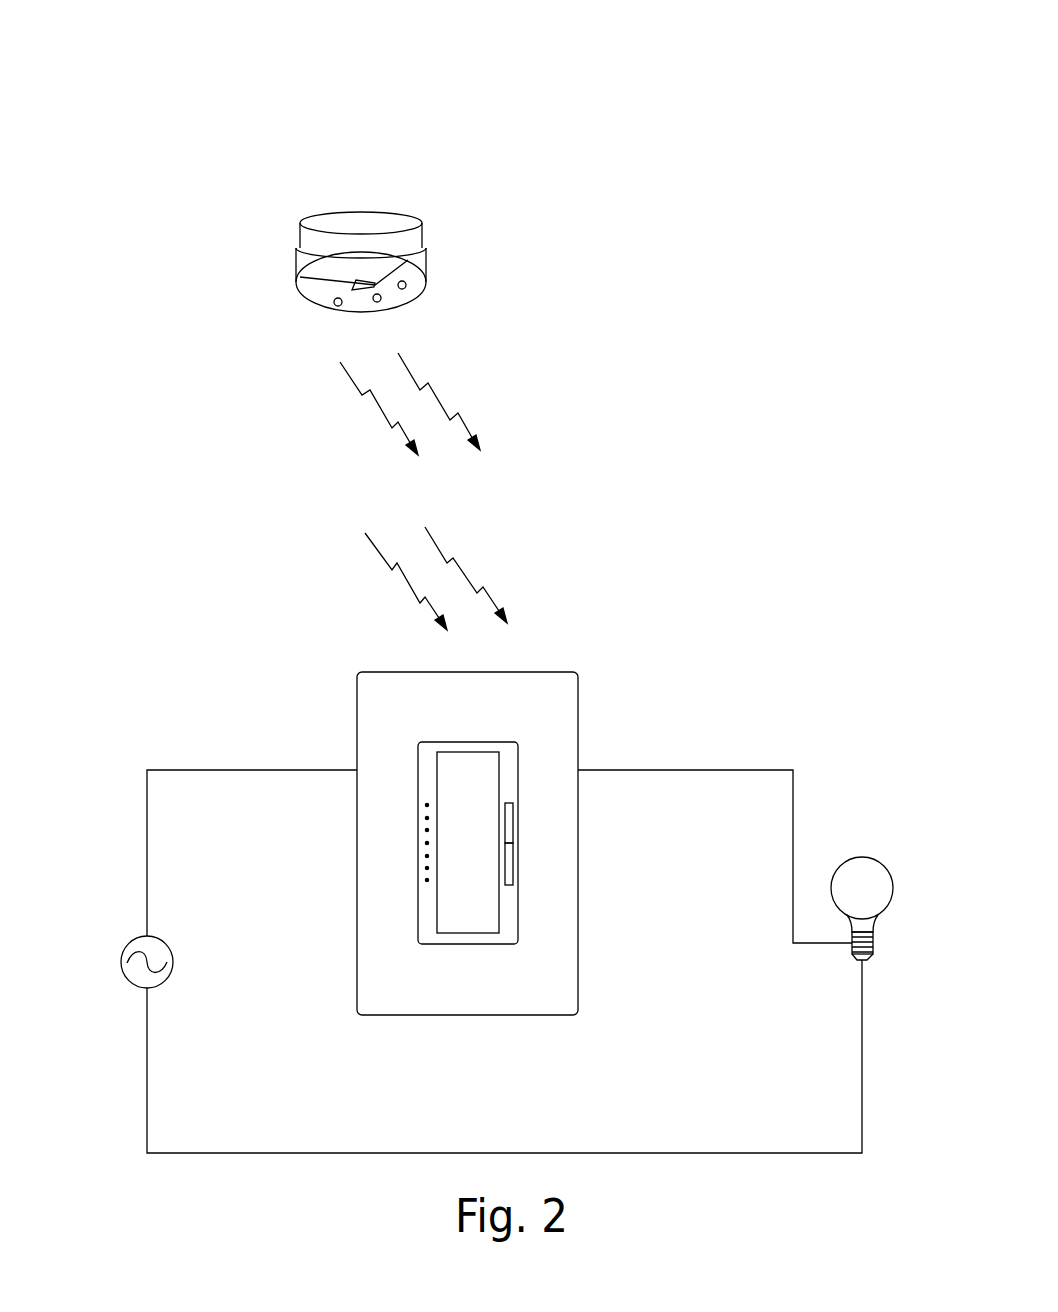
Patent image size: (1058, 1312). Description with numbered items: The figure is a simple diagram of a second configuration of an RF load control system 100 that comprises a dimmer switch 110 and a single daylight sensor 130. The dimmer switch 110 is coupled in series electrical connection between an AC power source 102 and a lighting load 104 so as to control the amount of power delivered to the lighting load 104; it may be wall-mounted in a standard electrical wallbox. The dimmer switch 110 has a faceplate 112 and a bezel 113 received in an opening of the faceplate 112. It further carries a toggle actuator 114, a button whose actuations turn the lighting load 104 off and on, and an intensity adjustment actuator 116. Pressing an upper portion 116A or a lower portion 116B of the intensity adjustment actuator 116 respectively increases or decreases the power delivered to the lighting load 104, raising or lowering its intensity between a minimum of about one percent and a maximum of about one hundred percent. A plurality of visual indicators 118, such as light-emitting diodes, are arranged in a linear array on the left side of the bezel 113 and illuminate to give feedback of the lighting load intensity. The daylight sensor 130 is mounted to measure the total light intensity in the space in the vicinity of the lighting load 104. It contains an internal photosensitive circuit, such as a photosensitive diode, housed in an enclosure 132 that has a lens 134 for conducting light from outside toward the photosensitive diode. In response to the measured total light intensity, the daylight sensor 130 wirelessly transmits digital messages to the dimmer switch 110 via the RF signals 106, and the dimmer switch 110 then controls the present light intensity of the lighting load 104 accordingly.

The RF load control system 100 is at (617, 147).
The AC power source 102 is at (132, 984).
The lighting load 104 is at (862, 877).
The RF signals 106 is at (497, 422).
The dimmer switch 110 is at (338, 702).
The faceplate 112 is at (547, 722).
The bezel 113 is at (427, 918).
The toggle actuator 114 is at (478, 925).
The intensity adjustment actuator 116 is at (527, 842).
The upper portion 116A is at (508, 823).
The lower portion 116B is at (510, 862).
The visual indicators 118 is at (418, 843).
The daylight sensor 130 is at (252, 173).
The enclosure 132 is at (413, 283).
The lens 134 is at (327, 268).